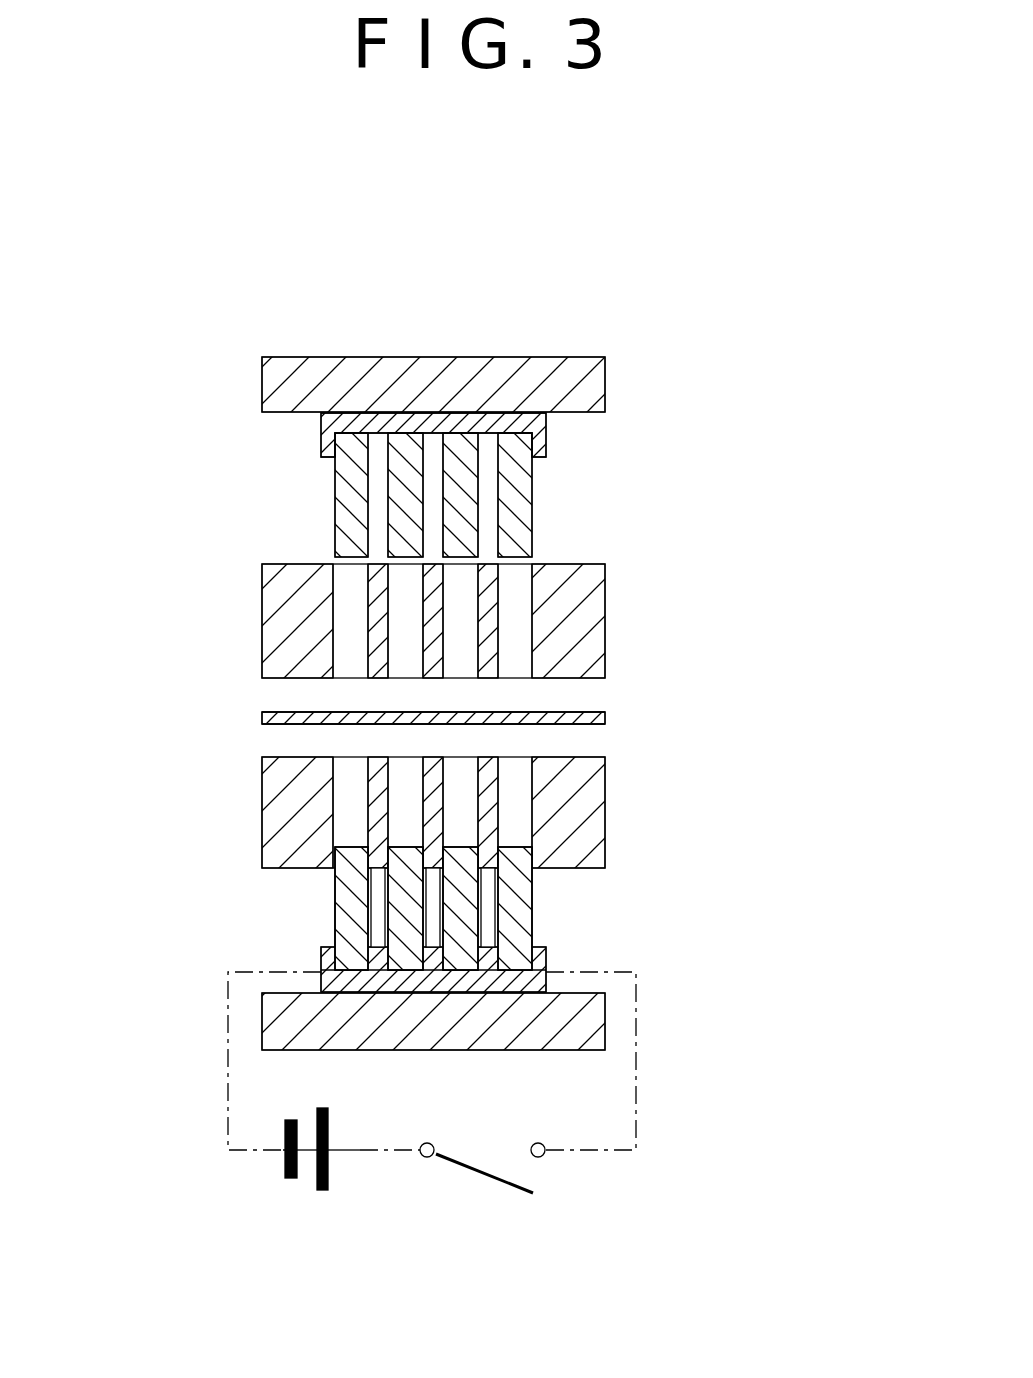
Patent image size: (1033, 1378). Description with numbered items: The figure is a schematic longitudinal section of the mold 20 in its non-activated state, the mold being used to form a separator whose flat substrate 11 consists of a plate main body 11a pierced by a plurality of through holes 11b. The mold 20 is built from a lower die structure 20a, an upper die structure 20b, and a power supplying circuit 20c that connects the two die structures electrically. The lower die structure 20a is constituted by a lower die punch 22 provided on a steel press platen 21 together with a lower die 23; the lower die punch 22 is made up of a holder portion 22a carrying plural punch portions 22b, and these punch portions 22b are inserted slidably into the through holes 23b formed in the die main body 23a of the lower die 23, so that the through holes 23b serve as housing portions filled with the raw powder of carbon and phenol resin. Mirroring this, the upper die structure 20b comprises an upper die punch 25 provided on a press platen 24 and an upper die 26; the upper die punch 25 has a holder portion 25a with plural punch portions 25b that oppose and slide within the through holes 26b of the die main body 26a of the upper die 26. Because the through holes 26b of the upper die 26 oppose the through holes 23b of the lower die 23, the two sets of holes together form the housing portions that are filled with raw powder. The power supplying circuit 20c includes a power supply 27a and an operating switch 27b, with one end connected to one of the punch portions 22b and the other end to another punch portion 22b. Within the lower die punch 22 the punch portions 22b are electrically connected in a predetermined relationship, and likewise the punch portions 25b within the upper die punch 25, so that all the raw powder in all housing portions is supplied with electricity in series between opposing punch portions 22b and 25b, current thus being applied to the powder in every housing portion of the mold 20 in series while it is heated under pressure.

The mold 20 is at (632, 334).
The lower die structure 20a is at (578, 902).
The upper die structure 20b is at (588, 456).
The power supplying circuit 20c is at (574, 1164).
The substrate 11 is at (613, 713).
The plate main body 11a is at (280, 711).
The through holes 11b is at (347, 724).
The press platen 21 is at (549, 1042).
The lower die punch 22 is at (552, 945).
The holder portion 22a is at (432, 985).
The punch portions 22b is at (345, 905).
The lower die 23 is at (610, 791).
The die main body 23a is at (595, 845).
The through holes 23b is at (340, 802).
The press platen 24 is at (347, 362).
The upper die punch 25 is at (541, 522).
The holder portion 25a is at (482, 413).
The punch portions 25b is at (340, 478).
The upper die 26 is at (613, 612).
The die main body 26a is at (312, 575).
The through holes 26b is at (340, 596).
The power supply 27a is at (322, 1176).
The operating switch 27b is at (460, 1164).